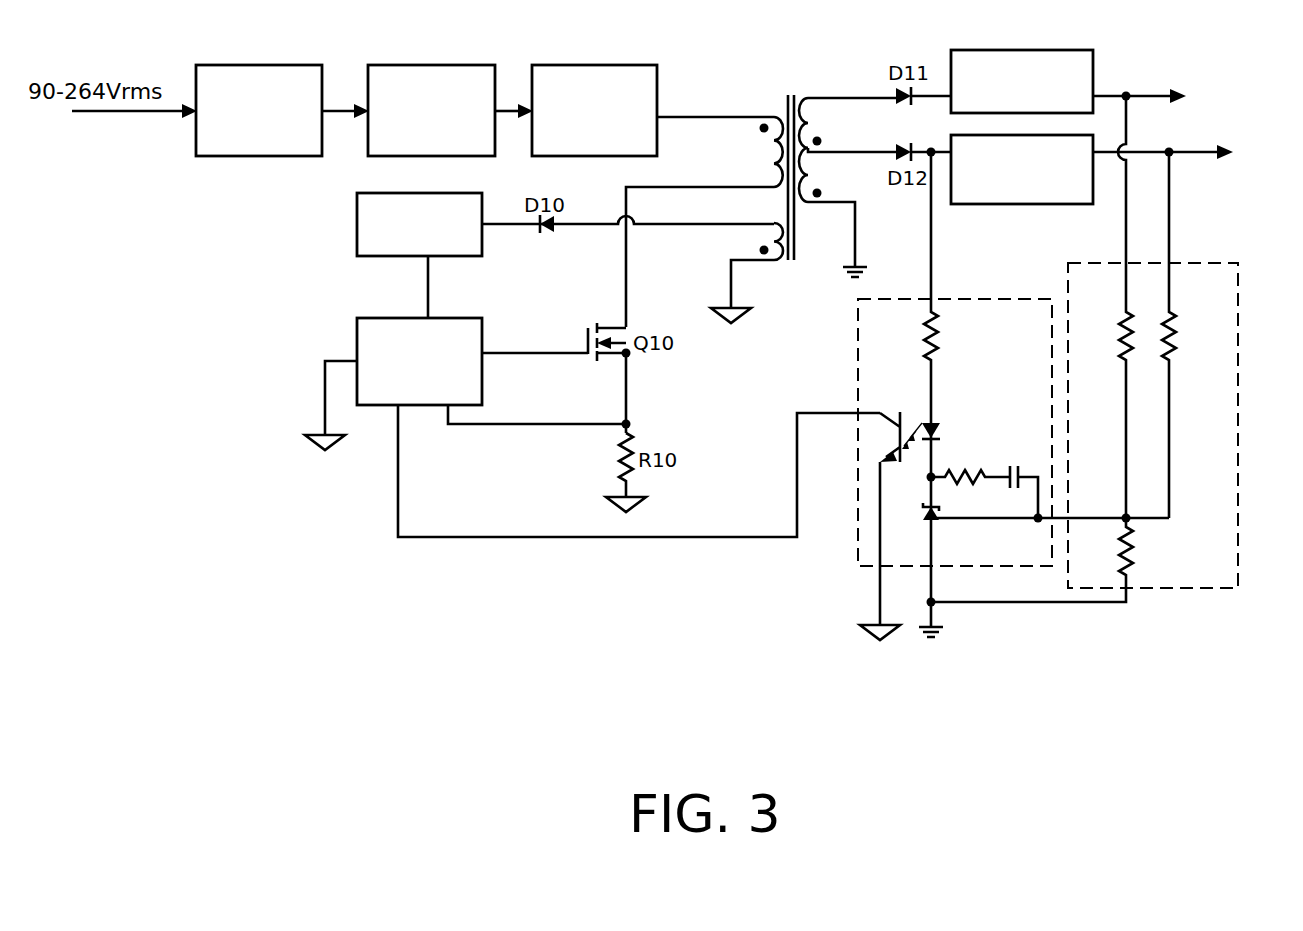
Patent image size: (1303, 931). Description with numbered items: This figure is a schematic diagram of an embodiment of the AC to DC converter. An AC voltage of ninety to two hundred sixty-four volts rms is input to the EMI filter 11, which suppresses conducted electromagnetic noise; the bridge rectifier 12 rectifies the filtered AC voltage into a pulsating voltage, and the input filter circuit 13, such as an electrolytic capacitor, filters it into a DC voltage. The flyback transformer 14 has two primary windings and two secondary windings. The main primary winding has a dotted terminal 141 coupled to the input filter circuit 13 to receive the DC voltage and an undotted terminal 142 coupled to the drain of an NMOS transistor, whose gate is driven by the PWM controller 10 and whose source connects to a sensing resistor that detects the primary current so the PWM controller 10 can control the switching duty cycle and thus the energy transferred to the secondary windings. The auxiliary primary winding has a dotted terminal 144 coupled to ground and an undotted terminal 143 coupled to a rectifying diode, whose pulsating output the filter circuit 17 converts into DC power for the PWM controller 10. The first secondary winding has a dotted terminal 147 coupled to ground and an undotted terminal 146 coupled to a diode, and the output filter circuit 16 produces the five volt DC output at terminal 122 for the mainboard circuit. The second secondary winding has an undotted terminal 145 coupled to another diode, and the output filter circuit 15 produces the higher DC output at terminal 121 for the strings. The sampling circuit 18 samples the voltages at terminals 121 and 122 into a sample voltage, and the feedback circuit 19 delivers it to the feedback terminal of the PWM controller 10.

The PWM controller 10 is at (482, 322).
The electromagnetic interference (EMI) filter 11 is at (250, 65).
The bridge rectifier 12 is at (437, 65).
The input filter circuit 13 is at (598, 65).
The flyback transformer 14 is at (788, 82).
The dotted terminal 141 is at (733, 116).
The undotted terminal 142 is at (719, 186).
The undotted terminal 143 is at (700, 225).
The dotted terminal 144 is at (731, 274).
The undotted terminal 145 is at (843, 97).
The undotted terminal 146 is at (862, 150).
The dotted terminal 147 is at (853, 212).
The output filter circuit 15 is at (1015, 50).
The output filter circuit 16 is at (1010, 204).
The terminal 121 is at (1186, 96).
The terminal 122 is at (1233, 152).
The filter circuit 17 is at (357, 230).
The sampling circuit 18 is at (1238, 423).
The feedback circuit 19 is at (858, 378).